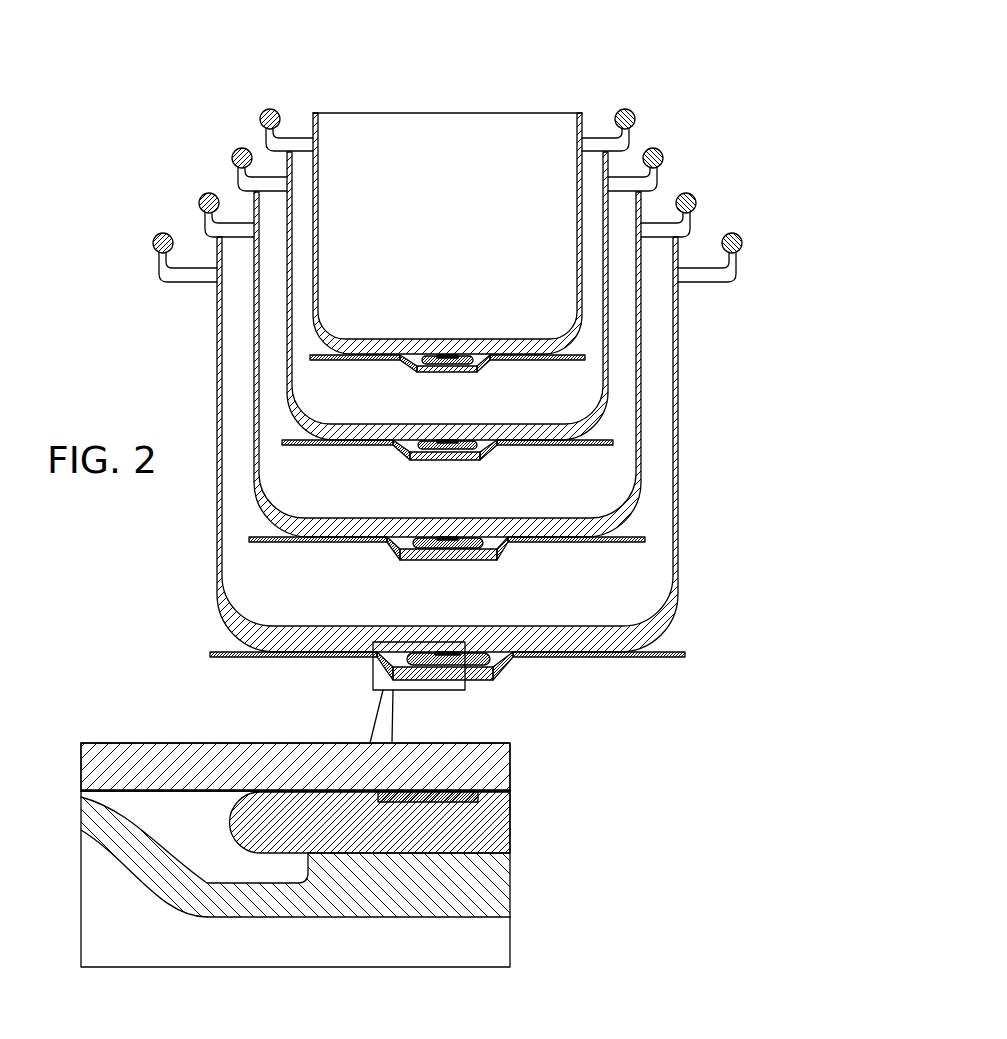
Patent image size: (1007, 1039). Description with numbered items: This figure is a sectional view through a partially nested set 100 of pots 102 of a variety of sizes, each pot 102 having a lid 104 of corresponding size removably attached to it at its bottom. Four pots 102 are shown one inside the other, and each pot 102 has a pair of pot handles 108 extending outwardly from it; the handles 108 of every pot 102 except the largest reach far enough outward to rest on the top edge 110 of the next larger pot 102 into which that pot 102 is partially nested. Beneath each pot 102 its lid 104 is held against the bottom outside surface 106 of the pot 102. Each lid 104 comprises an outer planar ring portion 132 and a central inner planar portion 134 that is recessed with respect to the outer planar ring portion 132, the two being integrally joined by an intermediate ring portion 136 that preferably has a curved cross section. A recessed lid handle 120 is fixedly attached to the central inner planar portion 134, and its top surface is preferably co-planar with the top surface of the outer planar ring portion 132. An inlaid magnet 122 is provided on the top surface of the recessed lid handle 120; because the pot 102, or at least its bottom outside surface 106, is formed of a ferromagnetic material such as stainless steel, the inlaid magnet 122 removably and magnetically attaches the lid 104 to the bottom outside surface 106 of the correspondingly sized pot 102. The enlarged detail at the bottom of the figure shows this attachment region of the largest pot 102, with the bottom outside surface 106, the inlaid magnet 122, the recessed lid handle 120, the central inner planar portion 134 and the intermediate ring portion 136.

The partially nested set of pots 100 is at (627, 82).
The pot 102 is at (317, 323).
The lid 104 is at (622, 543).
The bottom outside surface 106 is at (385, 545).
The pot handle 108 is at (247, 151).
The top edge 110 is at (605, 150).
The recessed lid handle 120 is at (497, 825).
The inlaid magnet 122 is at (477, 802).
The outer planar ring portion 132 is at (548, 540).
The central inner planar portion 134 is at (447, 558).
The intermediate ring portion 136 is at (507, 540).